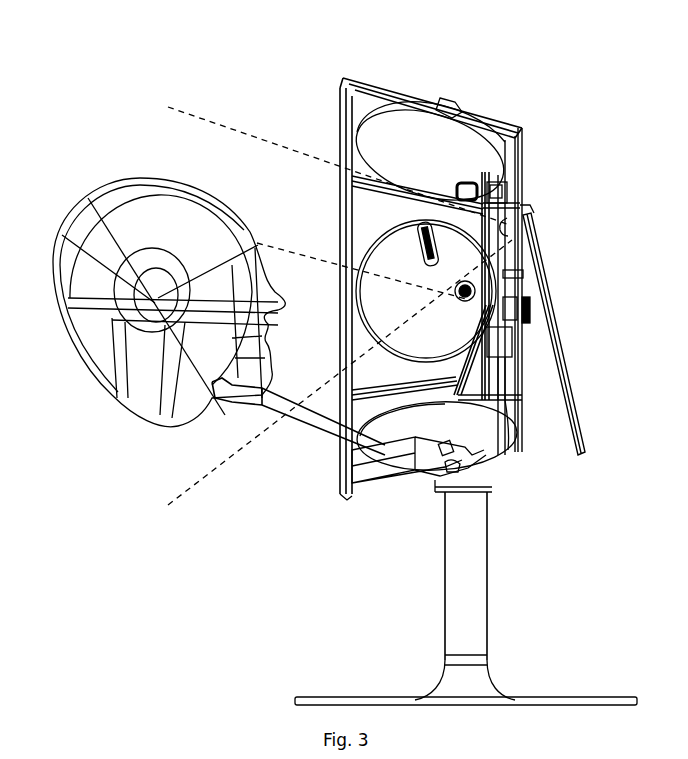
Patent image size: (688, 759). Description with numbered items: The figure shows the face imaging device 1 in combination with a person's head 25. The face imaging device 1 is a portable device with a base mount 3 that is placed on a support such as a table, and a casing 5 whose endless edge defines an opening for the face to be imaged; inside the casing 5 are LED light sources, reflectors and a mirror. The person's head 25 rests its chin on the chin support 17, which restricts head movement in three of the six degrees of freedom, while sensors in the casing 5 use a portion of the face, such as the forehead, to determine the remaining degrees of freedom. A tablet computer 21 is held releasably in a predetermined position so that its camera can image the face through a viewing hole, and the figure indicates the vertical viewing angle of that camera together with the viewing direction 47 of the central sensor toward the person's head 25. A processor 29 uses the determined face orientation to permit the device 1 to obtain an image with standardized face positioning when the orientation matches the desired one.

The face imaging device 1 is at (577, 119).
The base mount 3 is at (483, 557).
The casing 5 is at (447, 98).
The chin support 17 is at (298, 437).
The tablet computer 21 is at (580, 424).
The person's head 25 is at (135, 378).
The processor 29 is at (517, 447).
The viewing direction 47 is at (293, 255).